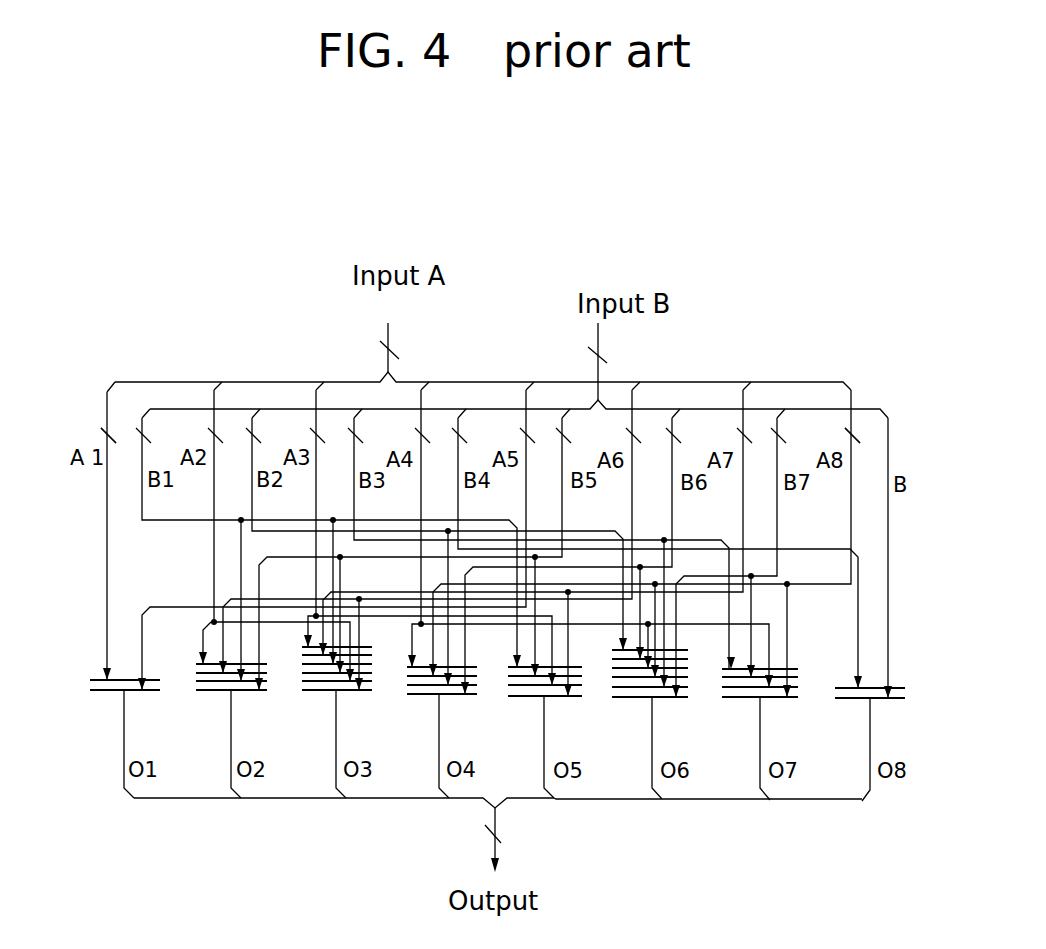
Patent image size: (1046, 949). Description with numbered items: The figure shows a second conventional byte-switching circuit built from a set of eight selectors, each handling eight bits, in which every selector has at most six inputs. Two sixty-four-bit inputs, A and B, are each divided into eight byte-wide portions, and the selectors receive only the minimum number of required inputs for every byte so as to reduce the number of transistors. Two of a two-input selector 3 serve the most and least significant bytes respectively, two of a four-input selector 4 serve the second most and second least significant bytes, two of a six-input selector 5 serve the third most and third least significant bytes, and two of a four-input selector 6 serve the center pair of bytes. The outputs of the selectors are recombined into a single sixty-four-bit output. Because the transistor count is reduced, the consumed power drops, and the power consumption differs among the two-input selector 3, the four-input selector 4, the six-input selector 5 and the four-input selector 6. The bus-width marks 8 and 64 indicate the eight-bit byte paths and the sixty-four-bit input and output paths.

The two-input selector 3 is at (103, 700).
The four-input selector 4 is at (216, 698).
The six-input selector 5 is at (321, 698).
The four-input selector 6 is at (428, 698).
The 8-bit bus 8 is at (503, 436).
The 64-bit bus 64 is at (502, 590).